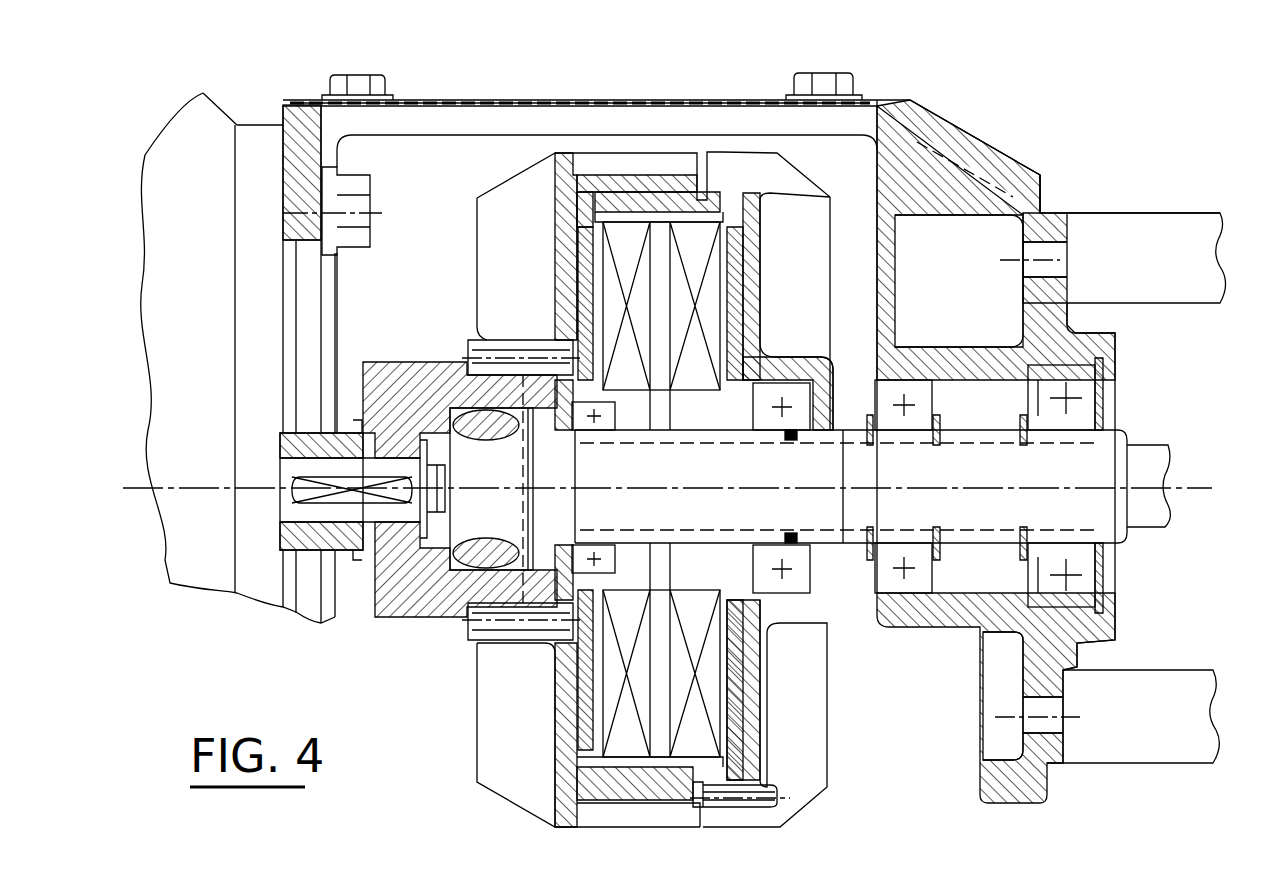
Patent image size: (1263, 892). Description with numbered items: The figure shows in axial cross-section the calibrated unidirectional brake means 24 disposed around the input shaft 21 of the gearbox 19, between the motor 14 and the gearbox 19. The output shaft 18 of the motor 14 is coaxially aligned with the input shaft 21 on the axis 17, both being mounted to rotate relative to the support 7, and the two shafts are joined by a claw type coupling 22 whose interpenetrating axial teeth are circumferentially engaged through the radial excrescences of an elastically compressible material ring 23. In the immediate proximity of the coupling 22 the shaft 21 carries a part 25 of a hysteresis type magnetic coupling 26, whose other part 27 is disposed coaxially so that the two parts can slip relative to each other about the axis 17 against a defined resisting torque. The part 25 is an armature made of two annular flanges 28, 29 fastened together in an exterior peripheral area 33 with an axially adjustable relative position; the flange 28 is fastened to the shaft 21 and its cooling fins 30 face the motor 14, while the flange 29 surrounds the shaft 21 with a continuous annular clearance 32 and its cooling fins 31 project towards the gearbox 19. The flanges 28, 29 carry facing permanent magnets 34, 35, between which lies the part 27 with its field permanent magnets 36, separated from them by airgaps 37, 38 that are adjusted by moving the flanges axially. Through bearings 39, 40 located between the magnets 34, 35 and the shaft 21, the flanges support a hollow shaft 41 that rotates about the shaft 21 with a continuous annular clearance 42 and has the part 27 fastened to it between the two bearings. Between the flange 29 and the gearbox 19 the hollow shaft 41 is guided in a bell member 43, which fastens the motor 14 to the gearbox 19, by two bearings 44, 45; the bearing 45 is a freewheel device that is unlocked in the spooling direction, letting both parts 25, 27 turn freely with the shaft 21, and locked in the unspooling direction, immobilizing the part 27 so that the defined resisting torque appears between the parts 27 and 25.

The support 7 is at (963, 142).
The motor 14 is at (188, 563).
The axis 17 is at (1212, 482).
The output shaft 18 is at (338, 462).
The gearbox 19 is at (1190, 232).
The input shaft 21 is at (1150, 460).
The coupling 22 is at (398, 603).
The elastically compressible material ring 23 is at (482, 437).
The means 24 is at (463, 740).
The part 25 is at (560, 780).
The coupling 26 is at (683, 820).
The part 27 is at (693, 722).
The flange 28 is at (557, 250).
The flange 29 is at (752, 252).
The cooling fins 30 is at (488, 205).
The cooling fins 31 is at (785, 192).
The annular clearance 32 is at (843, 440).
The exterior peripheral area 33 is at (612, 817).
The permanent magnets 34 is at (580, 290).
The permanent magnets 35 is at (735, 318).
The field permanent magnets 36 is at (708, 670).
The airgap 37 is at (608, 203).
The airgap 38 is at (727, 233).
The bearing 39 is at (607, 427).
The bearing 40 is at (762, 420).
The hollow shaft 41 is at (1130, 540).
The annular clearance 42 is at (1128, 430).
The bell member 43 is at (1028, 198).
The bearing 44 is at (923, 587).
The bearing 45 is at (1078, 588).